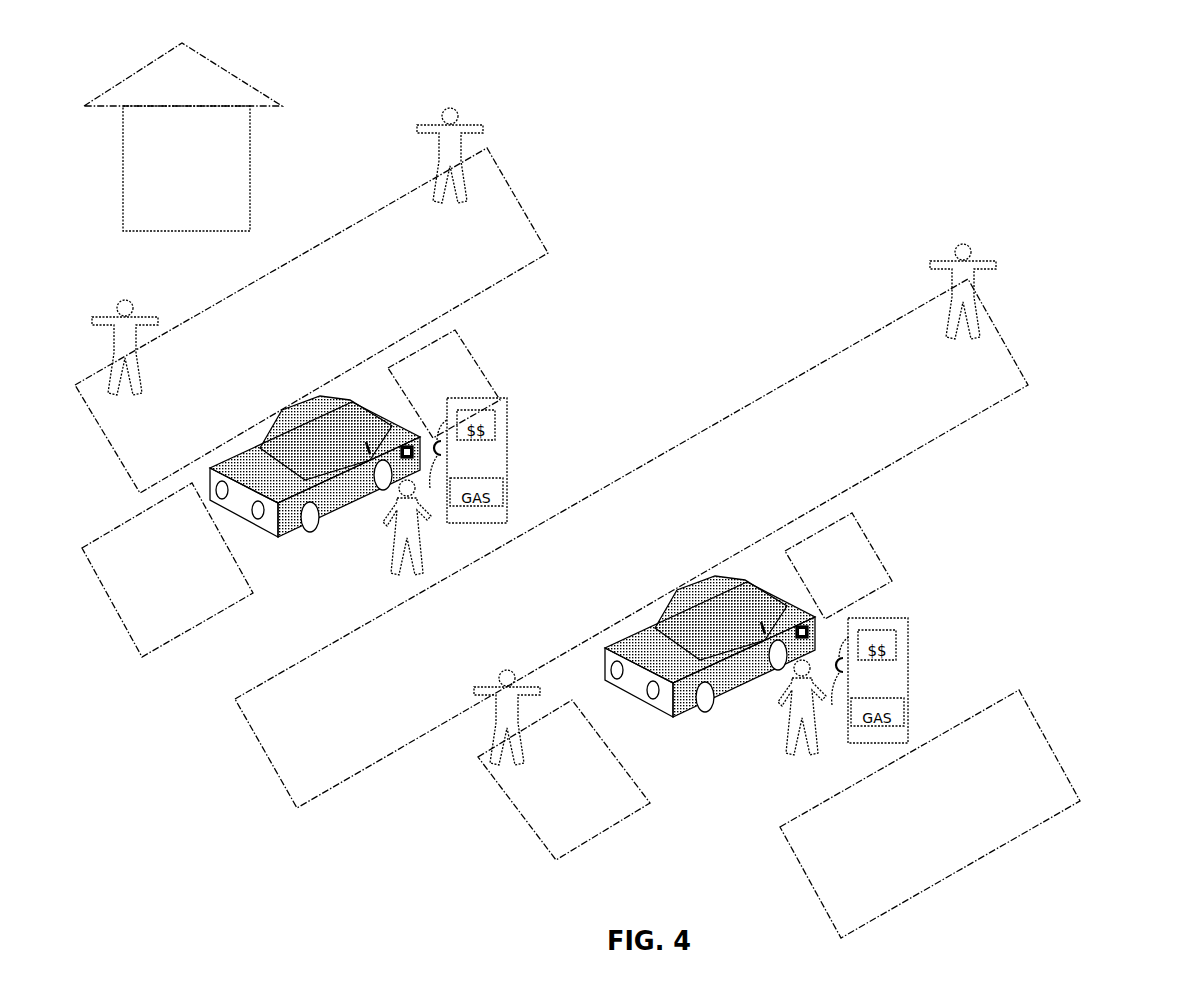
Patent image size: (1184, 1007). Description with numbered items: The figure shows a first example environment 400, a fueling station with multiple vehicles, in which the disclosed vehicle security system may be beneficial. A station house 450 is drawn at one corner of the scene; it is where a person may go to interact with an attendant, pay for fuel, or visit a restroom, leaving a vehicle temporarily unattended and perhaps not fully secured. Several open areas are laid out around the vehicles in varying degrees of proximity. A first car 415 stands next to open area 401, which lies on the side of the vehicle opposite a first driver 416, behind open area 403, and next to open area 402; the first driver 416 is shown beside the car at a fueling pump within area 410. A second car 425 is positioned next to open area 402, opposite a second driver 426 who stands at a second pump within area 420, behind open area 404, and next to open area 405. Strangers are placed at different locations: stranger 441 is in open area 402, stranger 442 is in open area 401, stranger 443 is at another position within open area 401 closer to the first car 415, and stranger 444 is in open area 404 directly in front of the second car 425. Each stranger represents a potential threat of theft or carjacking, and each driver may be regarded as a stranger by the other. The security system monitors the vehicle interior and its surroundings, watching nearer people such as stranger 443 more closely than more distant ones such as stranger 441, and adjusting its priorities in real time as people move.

The example environment 400 is at (1142, 92).
The open area 401 is at (548, 253).
The open area 402 is at (883, 328).
The open area 403 is at (170, 642).
The open area 404 is at (562, 853).
The open area 405 is at (1075, 790).
The area (gas pump area) 410 is at (475, 358).
The first car 415 is at (347, 492).
The first driver 416 is at (423, 558).
The area (gas pump area) 420 is at (867, 544).
The second car 425 is at (745, 680).
The second driver 426 is at (812, 775).
The stranger 441 is at (972, 284).
The stranger 442 is at (460, 148).
The stranger 443 is at (137, 342).
The stranger 444 is at (517, 712).
The station house 450 is at (252, 138).